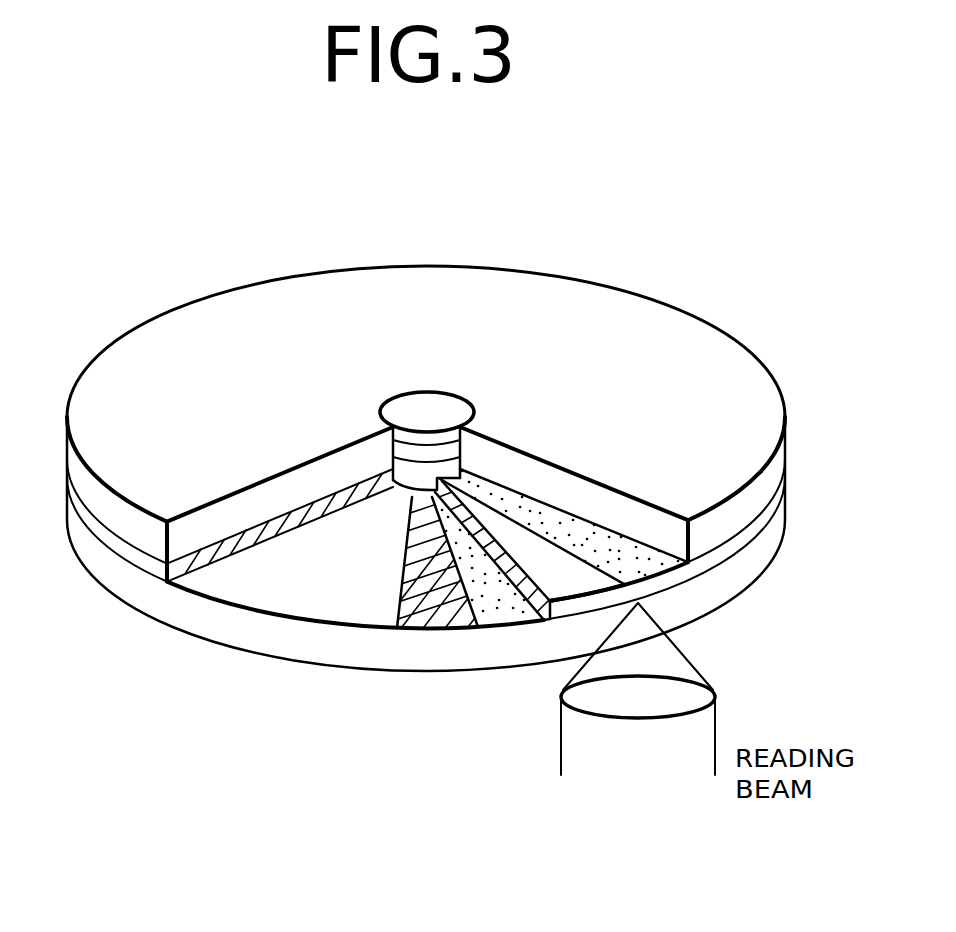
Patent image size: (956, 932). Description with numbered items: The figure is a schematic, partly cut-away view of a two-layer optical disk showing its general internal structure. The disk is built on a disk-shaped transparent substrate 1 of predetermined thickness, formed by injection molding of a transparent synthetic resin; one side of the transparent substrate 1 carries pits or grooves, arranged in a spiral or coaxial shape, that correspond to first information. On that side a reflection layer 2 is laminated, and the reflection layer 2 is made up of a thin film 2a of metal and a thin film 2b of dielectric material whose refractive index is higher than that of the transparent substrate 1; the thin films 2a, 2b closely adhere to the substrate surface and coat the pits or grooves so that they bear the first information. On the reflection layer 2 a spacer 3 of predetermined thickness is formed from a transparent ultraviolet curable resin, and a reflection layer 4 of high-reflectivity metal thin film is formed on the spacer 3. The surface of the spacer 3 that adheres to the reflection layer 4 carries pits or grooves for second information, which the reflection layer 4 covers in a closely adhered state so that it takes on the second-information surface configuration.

The transparent substrate 1 is at (142, 595).
The reflection layer 2 is at (444, 643).
The thin film 2a is at (437, 610).
The thin film of dielectric material 2b is at (508, 612).
The spacer 3 is at (575, 578).
The reflection layer 4 is at (640, 568).